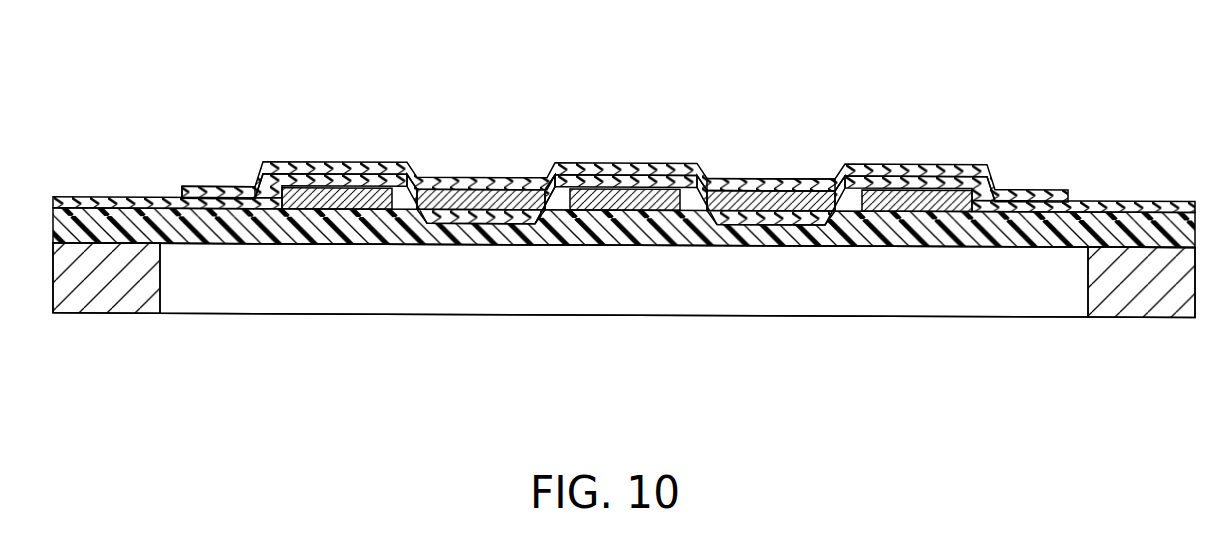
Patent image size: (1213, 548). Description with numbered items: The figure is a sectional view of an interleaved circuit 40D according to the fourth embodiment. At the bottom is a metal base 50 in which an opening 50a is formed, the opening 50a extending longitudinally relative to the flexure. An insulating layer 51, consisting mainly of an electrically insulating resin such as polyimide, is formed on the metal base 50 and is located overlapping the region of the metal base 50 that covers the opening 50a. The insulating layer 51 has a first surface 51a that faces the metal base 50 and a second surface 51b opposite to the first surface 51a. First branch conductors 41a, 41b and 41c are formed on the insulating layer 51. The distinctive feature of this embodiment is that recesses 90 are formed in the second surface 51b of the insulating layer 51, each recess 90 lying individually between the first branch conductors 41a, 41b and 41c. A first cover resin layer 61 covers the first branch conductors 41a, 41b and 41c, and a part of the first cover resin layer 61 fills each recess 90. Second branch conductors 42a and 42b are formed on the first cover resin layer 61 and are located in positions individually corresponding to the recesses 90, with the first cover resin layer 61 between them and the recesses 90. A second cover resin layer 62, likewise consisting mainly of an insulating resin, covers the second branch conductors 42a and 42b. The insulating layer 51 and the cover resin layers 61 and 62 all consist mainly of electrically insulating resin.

The interleaved circuit 40D is at (946, 86).
The first branch conductor 41a is at (323, 194).
The first branch conductor 41b is at (612, 200).
The first branch conductor 41c is at (910, 207).
The second branch conductor 42a is at (477, 189).
The second branch conductor 42b is at (775, 189).
The metal base 50 is at (104, 302).
The opening 50a is at (708, 295).
The insulating layer 51 is at (410, 238).
The first surface 51a is at (228, 243).
The second surface 51b is at (233, 187).
The first cover resin layer 61 is at (565, 215).
The second cover resin layer 62 is at (627, 164).
The recess 90 is at (483, 222).